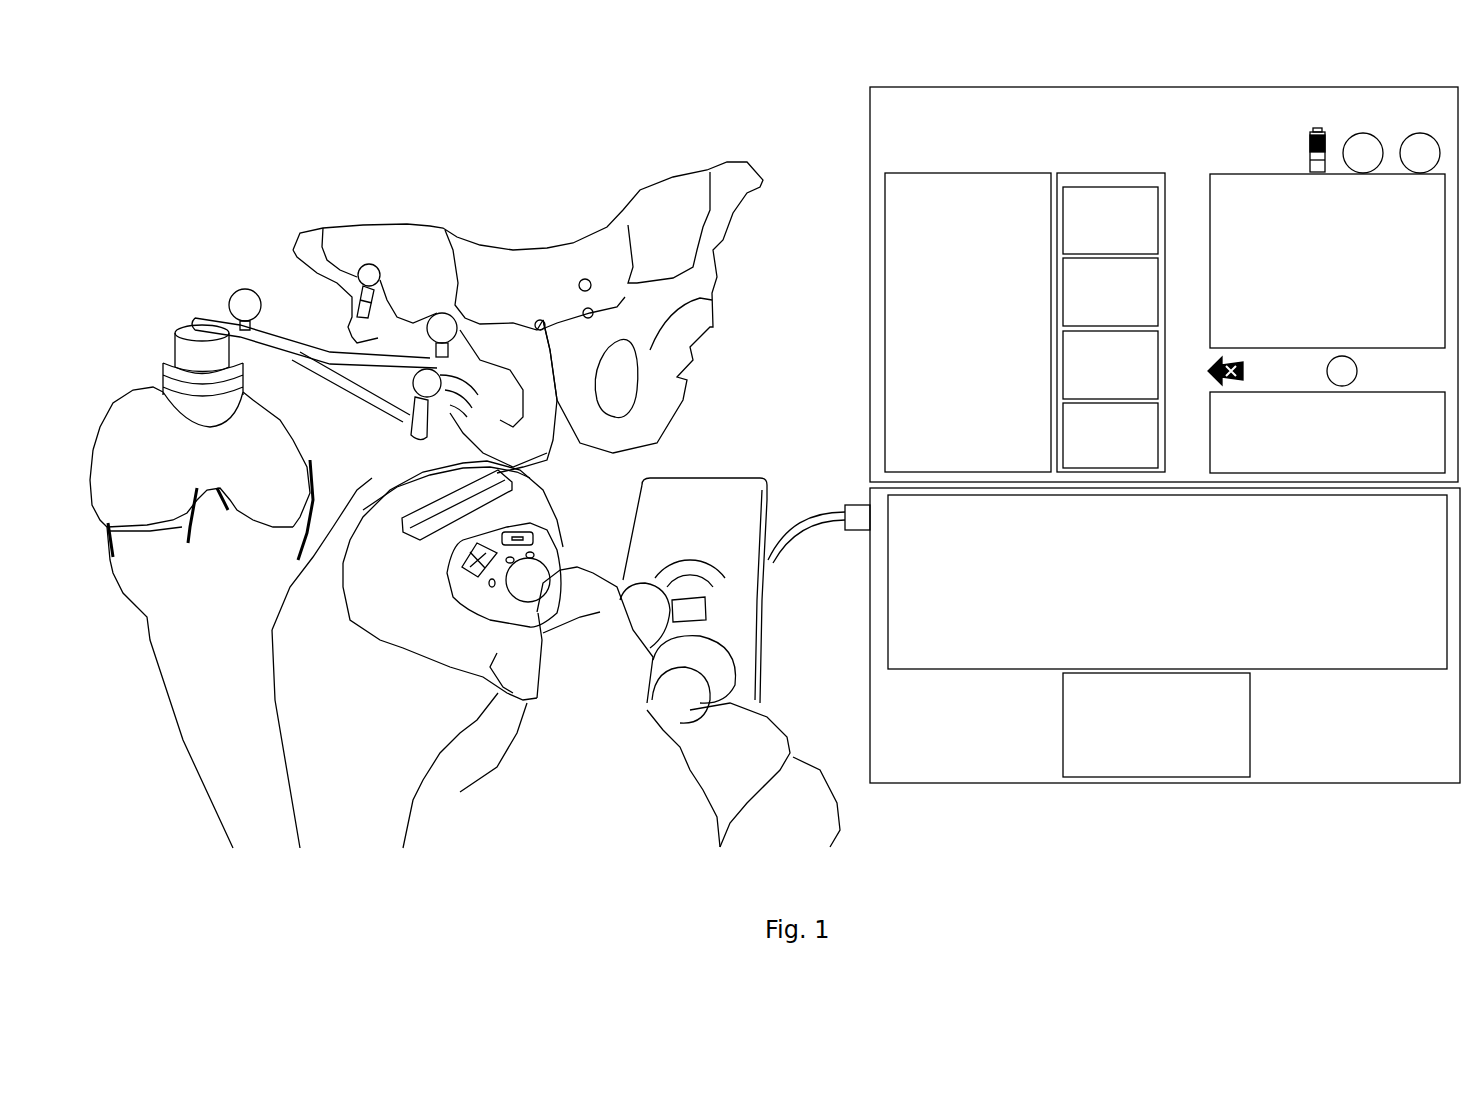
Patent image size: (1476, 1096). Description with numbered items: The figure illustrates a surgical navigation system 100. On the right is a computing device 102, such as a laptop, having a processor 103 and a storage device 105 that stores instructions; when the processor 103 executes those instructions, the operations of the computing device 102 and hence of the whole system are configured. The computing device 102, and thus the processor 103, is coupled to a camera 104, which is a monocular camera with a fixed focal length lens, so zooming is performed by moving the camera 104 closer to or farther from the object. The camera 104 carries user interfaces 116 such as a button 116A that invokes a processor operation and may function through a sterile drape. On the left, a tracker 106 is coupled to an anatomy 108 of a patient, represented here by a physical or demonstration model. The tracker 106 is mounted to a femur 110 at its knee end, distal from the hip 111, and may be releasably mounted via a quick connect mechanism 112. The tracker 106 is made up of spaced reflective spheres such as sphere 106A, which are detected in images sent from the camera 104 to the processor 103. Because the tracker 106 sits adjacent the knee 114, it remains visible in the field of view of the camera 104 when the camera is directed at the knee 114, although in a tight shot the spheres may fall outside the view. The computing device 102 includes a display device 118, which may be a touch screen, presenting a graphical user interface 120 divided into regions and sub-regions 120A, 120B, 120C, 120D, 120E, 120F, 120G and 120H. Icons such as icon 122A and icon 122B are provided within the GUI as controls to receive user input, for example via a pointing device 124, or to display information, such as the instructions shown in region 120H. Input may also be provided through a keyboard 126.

The surgical navigation system 100 is at (292, 73).
The computing device 102 is at (955, 728).
The processor 103 is at (862, 613).
The camera 104 is at (487, 580).
The storage device 105 is at (866, 650).
The tracker 106 is at (316, 345).
The reflective sphere 106A is at (231, 291).
The anatomy 108 is at (299, 592).
The femur 110 is at (345, 413).
The hip 111 is at (520, 288).
The quick connect mechanism 112 is at (163, 358).
The knee 114 is at (220, 522).
The user interfaces 116 is at (440, 574).
The button 116A is at (555, 556).
The display device 118 is at (870, 108).
The graphical user interface 120 is at (952, 126).
The region 120A is at (1037, 456).
The region 120B is at (1063, 172).
The region 120C is at (1139, 226).
The region 120D is at (1140, 305).
The region 120E is at (1138, 383).
The region 120F is at (1137, 450).
The region 120G is at (1286, 210).
The region 120H is at (1278, 475).
The icon 122A is at (1360, 134).
The icon 122B is at (1333, 357).
The pointing device 124 is at (1242, 769).
The keyboard 126 is at (1428, 659).